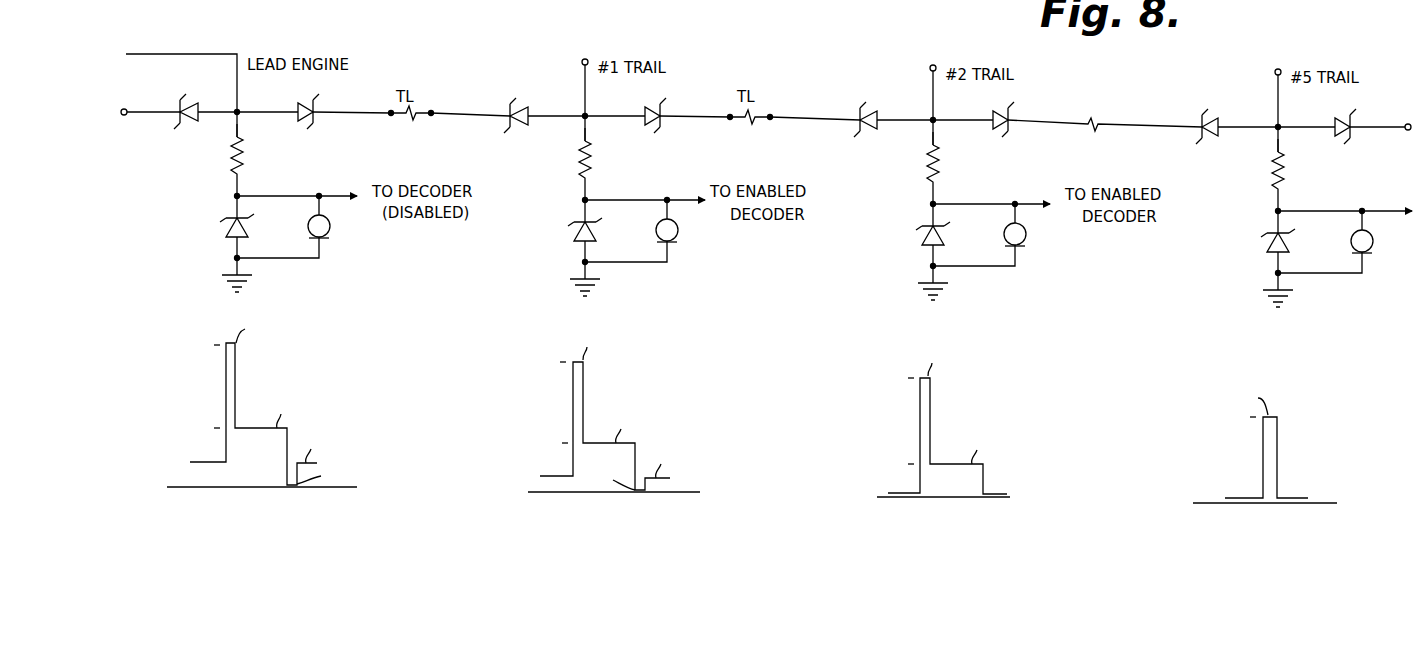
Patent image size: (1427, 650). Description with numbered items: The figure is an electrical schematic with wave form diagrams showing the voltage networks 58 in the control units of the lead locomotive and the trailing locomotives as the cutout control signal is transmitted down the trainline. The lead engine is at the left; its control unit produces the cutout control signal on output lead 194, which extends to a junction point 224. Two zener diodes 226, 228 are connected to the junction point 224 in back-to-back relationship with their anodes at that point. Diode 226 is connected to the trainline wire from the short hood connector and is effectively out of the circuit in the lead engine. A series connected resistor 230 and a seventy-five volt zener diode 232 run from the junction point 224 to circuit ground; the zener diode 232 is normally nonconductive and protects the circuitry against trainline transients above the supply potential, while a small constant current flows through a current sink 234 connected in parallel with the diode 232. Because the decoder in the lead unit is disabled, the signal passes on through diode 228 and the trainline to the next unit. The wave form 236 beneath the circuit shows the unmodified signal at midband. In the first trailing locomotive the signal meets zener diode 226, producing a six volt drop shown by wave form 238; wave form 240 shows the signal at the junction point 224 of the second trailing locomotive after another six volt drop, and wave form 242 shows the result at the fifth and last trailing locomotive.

The voltage network 58 is at (178, 142).
The output lead 194 is at (179, 52).
The junction point 224 is at (246, 110).
The zener diode 226 is at (171, 103).
The zener diode 228 is at (318, 125).
The resistor 230 is at (245, 167).
The zener diode 232 is at (225, 231).
The current sink 234 is at (330, 230).
The wave form 236 is at (255, 393).
The wave form 238 is at (611, 398).
The wave form 240 is at (958, 431).
The wave form 242 is at (1294, 428).